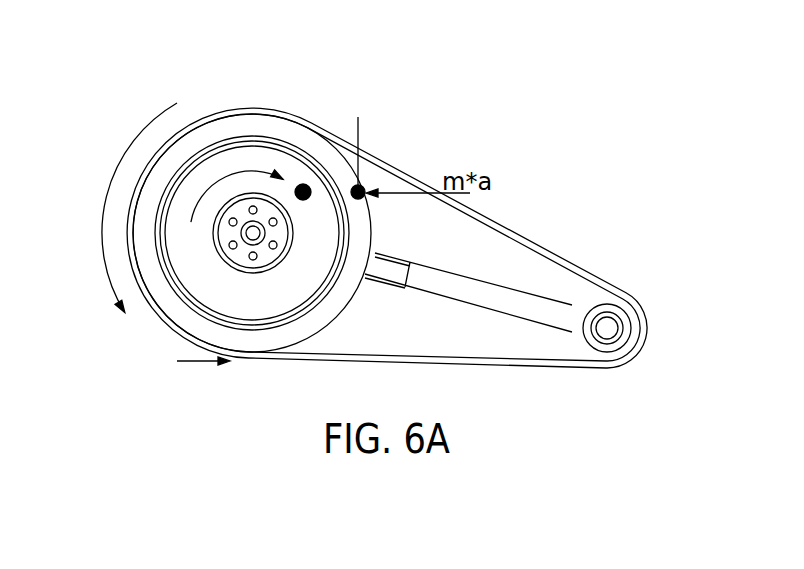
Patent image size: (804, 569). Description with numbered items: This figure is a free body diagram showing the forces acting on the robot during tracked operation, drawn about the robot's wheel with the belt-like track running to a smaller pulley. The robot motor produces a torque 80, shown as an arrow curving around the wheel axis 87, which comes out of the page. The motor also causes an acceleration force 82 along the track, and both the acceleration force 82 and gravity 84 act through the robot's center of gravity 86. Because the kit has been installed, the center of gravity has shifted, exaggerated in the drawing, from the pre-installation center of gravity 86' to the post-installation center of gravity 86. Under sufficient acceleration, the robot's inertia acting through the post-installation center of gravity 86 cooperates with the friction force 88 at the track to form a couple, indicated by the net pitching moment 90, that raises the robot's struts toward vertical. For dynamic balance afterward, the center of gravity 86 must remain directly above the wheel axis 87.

The torque 80 is at (253, 173).
The acceleration force 82 is at (413, 178).
The gravity 84 is at (360, 128).
The pre-installation center of gravity 86' is at (323, 140).
The post-installation center of gravity 86 is at (389, 219).
The wheel axis 87 is at (253, 233).
The friction force 88 is at (195, 362).
The net pitching moment 90 is at (103, 220).